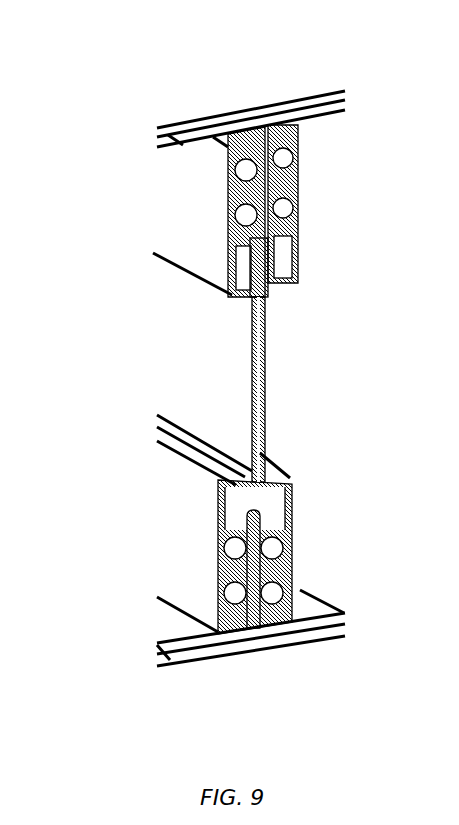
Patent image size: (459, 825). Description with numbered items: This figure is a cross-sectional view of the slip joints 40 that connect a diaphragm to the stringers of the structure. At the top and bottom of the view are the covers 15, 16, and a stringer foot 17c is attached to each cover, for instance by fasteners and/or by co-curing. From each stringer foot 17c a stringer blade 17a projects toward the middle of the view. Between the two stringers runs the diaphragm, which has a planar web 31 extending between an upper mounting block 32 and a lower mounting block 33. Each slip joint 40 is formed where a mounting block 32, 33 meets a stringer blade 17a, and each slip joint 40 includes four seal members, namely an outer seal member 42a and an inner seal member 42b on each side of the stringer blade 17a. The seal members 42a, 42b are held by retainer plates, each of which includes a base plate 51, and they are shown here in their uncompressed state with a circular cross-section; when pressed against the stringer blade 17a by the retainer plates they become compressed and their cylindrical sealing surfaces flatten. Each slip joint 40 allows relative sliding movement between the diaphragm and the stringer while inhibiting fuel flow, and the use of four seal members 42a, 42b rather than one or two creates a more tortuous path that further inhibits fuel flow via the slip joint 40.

The cover 15 is at (212, 120).
The cover 16 is at (320, 637).
The stringer blade 17a is at (263, 240).
The stringer foot 17c is at (300, 118).
The planar web 31 is at (262, 363).
The upper mounting block 32 is at (280, 265).
The lower mounting block 33 is at (268, 498).
The slip joint 40 is at (110, 193).
The outer seal member 42a is at (283, 163).
The inner seal member 42b is at (283, 213).
The base plate 51 is at (178, 250).